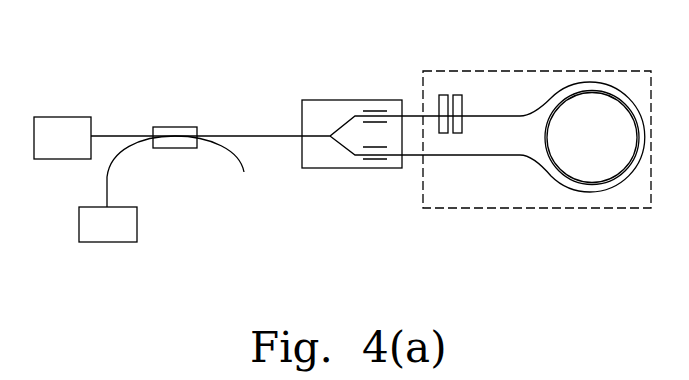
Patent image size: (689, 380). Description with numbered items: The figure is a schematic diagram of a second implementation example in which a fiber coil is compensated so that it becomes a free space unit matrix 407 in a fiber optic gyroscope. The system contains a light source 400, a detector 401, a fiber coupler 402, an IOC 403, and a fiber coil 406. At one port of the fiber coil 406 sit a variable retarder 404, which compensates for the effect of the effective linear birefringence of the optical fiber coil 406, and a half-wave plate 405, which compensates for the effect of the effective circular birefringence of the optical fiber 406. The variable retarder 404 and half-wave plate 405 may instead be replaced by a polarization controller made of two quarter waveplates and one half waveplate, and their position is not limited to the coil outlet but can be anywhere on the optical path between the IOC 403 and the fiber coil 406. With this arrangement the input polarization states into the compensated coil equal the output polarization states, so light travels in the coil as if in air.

The light source 400 is at (60, 117).
The detector 401 is at (137, 225).
The fiber coupler 402 is at (167, 127).
The IOC 403 is at (320, 100).
The variable retarder 404 is at (458, 133).
The half-wave plate 405 is at (439, 95).
The fiber coil 406 is at (585, 192).
The free space unit matrix 407 is at (498, 71).